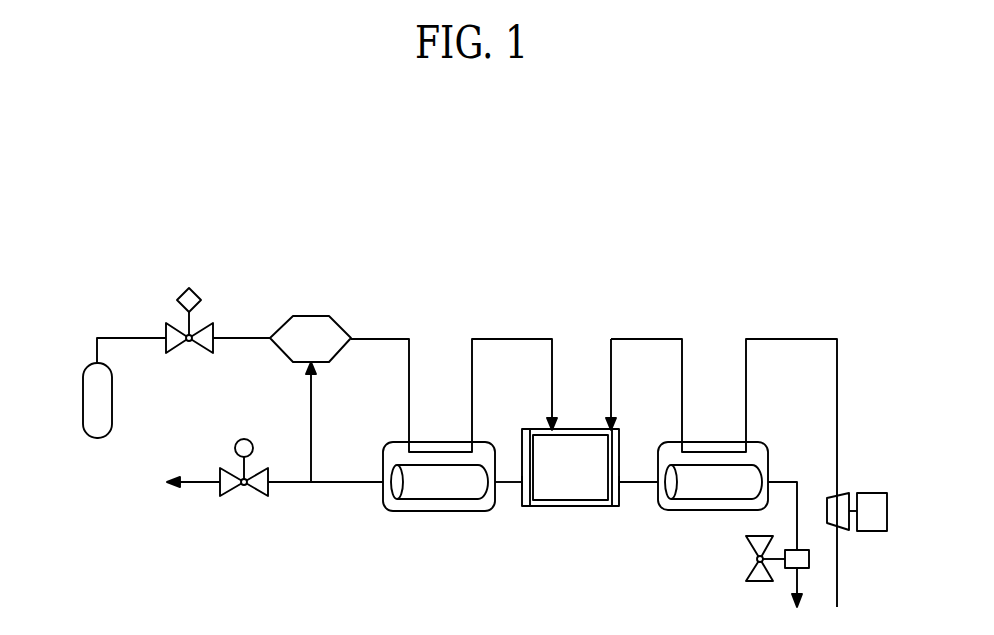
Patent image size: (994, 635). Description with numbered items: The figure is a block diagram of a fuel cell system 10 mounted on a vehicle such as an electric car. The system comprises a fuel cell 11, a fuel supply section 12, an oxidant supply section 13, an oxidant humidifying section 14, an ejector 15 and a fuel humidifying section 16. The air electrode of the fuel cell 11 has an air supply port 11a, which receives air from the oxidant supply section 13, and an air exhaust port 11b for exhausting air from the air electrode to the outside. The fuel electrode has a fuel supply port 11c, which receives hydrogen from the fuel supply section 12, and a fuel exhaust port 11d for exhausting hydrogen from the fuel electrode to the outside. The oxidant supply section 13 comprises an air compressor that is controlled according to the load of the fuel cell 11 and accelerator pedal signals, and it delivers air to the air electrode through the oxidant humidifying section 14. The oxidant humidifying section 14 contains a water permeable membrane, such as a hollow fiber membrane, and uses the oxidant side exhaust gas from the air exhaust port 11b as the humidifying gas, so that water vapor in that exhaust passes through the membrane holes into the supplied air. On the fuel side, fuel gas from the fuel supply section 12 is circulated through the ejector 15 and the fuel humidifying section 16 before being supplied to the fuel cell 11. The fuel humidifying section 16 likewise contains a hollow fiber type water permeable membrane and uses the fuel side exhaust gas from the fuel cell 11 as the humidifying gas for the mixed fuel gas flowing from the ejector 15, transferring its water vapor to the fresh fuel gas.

The fuel cell system 10 is at (748, 262).
The fuel cell 11 is at (577, 440).
The air supply port 11a is at (617, 430).
The air exhaust port 11b is at (620, 487).
The fuel supply port 11c is at (548, 428).
The fuel exhaust port 11d is at (520, 487).
The fuel supply section 12 is at (88, 431).
The oxidant supply section 13 is at (851, 497).
The oxidant humidifying section 14 is at (709, 512).
The ejector 15 is at (311, 314).
The fuel humidifying section 16 is at (438, 507).